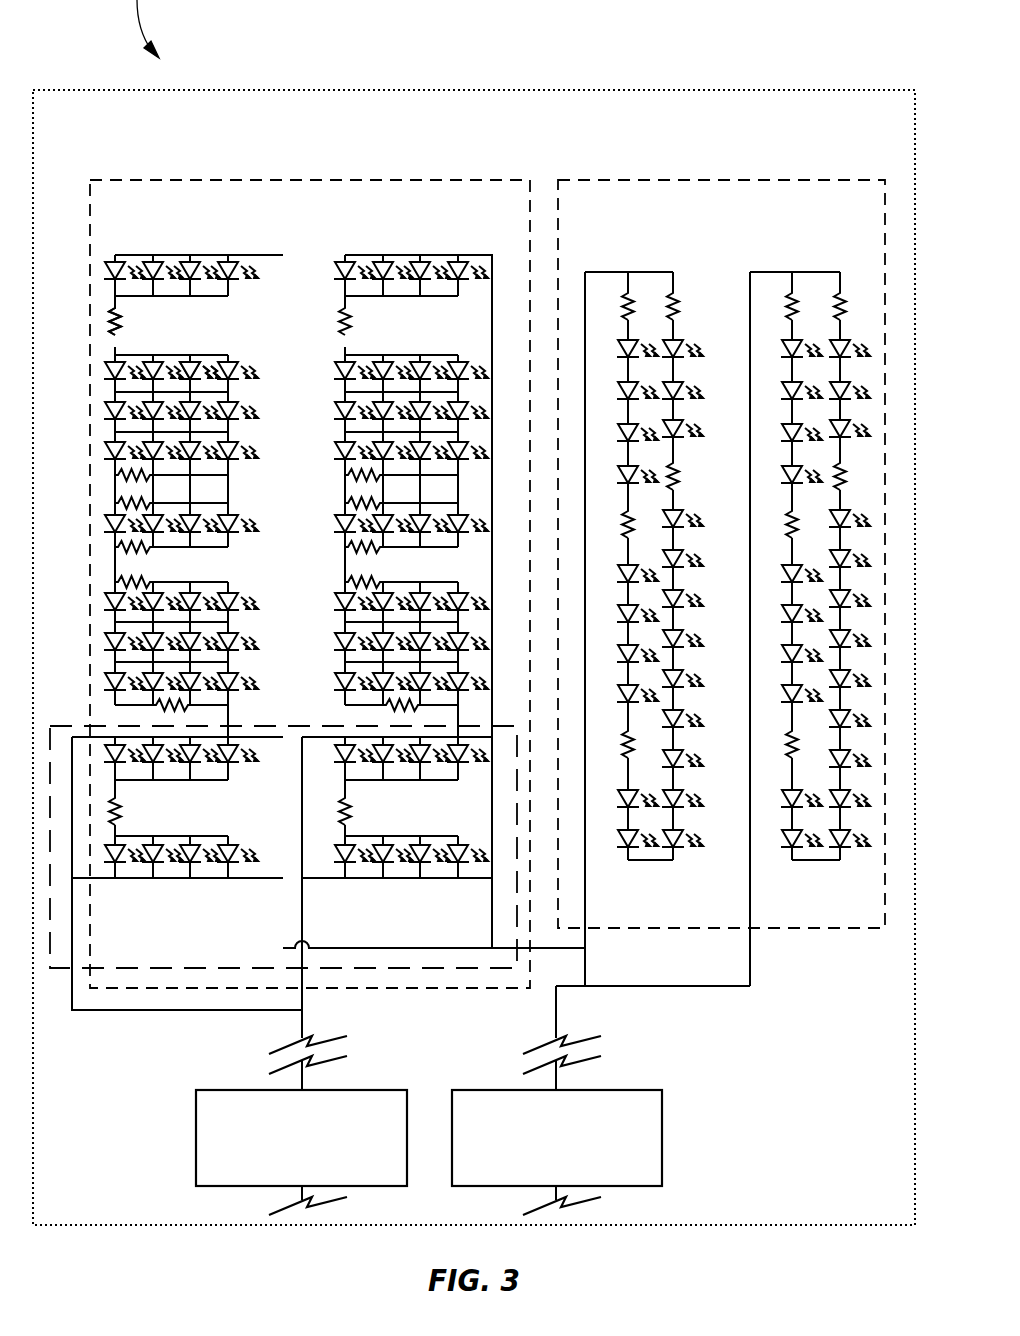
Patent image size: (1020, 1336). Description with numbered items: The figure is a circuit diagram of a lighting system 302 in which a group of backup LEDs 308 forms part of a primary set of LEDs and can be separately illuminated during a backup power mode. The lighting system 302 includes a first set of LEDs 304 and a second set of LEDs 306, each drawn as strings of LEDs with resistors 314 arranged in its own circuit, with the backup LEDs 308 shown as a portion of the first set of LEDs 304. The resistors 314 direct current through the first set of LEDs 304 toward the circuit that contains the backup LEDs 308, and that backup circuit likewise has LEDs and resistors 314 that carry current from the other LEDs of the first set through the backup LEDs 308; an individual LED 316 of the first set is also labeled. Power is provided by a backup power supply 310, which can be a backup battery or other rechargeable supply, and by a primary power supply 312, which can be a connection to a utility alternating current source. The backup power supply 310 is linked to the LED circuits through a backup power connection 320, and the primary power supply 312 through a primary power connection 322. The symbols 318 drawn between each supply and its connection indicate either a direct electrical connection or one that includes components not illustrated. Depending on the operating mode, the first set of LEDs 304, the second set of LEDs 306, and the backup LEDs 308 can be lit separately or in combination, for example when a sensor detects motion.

The lighting system 302 is at (474, 657).
The first set of LEDs 304 is at (310, 584).
The second set of LEDs 306 is at (721, 583).
The backup LEDs 308 is at (283, 847).
The backup power supply 310 is at (301, 1138).
The primary power supply 312 is at (557, 1138).
The resistors 314 is at (122, 318).
The LED 316 is at (201, 357).
The symbols 318 is at (235, 1064).
The backup power connection 320 is at (284, 482).
The primary power connection 322 is at (748, 531).